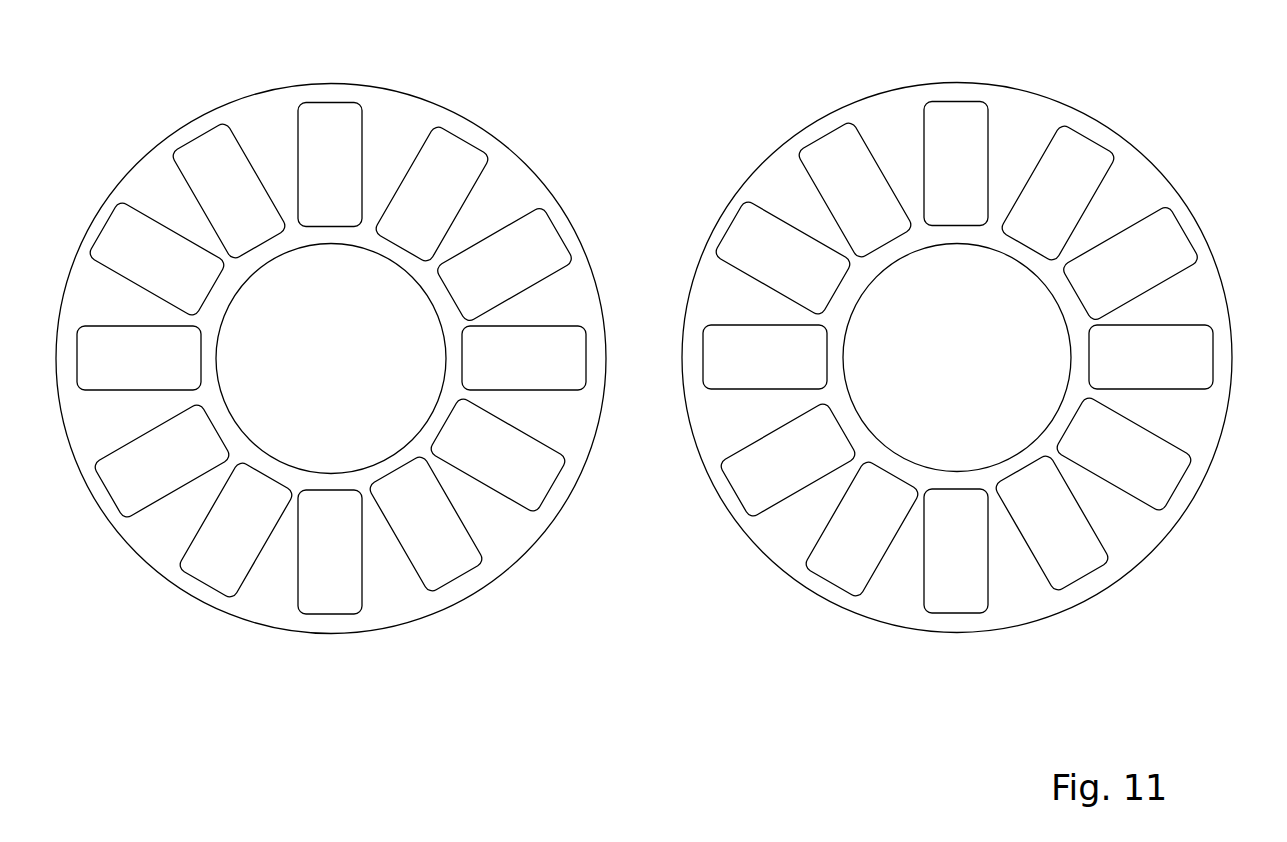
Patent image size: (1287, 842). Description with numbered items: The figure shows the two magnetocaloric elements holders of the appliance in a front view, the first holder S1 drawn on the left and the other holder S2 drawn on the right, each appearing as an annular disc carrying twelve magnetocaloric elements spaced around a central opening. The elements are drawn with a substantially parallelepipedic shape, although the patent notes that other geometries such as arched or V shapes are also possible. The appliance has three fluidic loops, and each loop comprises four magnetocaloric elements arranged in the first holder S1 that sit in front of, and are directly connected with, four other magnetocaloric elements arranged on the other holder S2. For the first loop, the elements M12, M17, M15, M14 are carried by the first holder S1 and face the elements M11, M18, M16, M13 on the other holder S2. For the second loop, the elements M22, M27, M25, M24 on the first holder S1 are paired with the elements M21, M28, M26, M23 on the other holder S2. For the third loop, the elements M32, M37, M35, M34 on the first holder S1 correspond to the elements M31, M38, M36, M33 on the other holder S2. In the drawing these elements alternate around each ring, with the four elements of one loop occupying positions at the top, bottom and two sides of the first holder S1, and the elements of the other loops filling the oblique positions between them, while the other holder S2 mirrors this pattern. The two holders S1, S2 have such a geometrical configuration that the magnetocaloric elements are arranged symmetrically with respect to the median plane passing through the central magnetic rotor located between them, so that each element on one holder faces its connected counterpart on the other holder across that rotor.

The first holder S1 is at (407, 118).
The other holder S2 is at (1035, 108).
The magnetocaloric element M11 is at (765, 357).
The magnetocaloric element M12 is at (524, 358).
The magnetocaloric element M13 is at (956, 551).
The magnetocaloric element M14 is at (330, 552).
The magnetocaloric element M15 is at (139, 358).
The magnetocaloric element M16 is at (1151, 357).
The magnetocaloric element M17 is at (330, 165).
The magnetocaloric element M18 is at (956, 164).
The magnetocaloric element M21 is at (782, 257).
The magnetocaloric element M22 is at (504, 264).
The magnetocaloric element M23 is at (861, 528).
The magnetocaloric element M24 is at (425, 523).
The magnetocaloric element M25 is at (161, 460).
The magnetocaloric element M26 is at (1123, 453).
The magnetocaloric element M27 is at (228, 190).
The magnetocaloric element M28 is at (1057, 192).
The magnetocaloric element M31 is at (854, 189).
The magnetocaloric element M32 is at (431, 193).
The magnetocaloric element M33 is at (787, 459).
The magnetocaloric element M34 is at (497, 454).
The magnetocaloric element M35 is at (235, 529).
The magnetocaloric element M36 is at (1051, 522).
The magnetocaloric element M37 is at (156, 258).
The magnetocaloric element M38 is at (1130, 263).